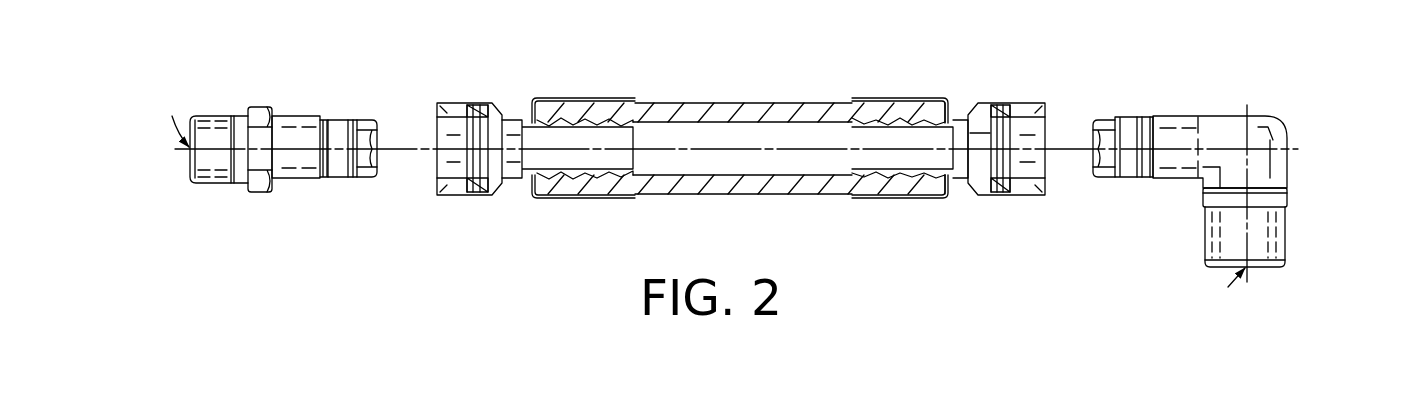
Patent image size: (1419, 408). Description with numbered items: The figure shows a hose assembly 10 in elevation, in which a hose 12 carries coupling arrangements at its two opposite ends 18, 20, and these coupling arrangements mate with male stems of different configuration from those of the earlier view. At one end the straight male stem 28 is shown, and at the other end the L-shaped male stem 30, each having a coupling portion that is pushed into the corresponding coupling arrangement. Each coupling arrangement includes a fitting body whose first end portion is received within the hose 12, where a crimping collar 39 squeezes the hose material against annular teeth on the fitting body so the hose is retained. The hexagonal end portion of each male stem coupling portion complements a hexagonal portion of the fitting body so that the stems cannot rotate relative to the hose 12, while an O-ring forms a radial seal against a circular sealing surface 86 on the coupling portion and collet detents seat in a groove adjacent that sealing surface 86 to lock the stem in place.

The hose assembly 10 is at (809, 102).
The hose 12 is at (737, 112).
The end 18 is at (540, 197).
The end 20 is at (913, 186).
The male stem 28 is at (242, 107).
The male stem 30 is at (1259, 117).
The crimping collar 39 is at (918, 98).
The circular sealing surface 86 is at (345, 125).